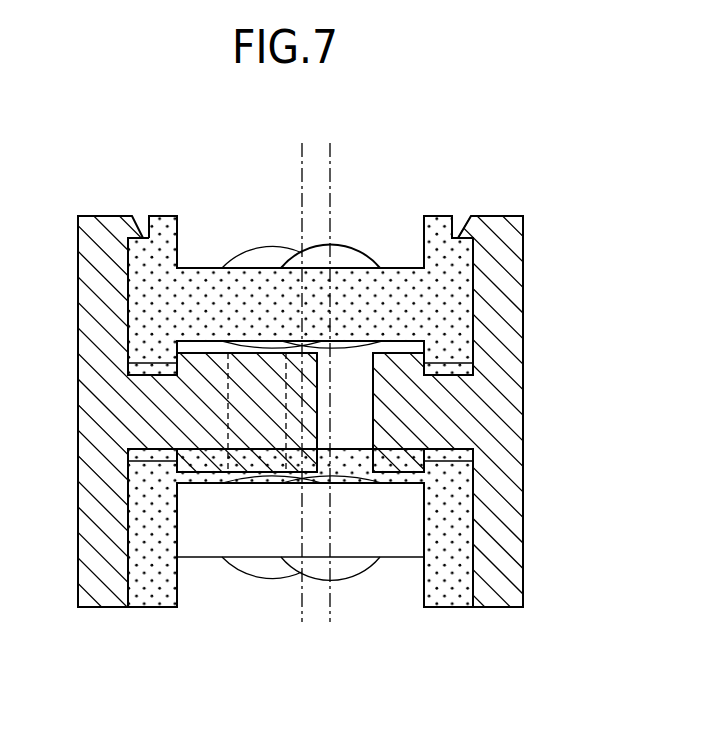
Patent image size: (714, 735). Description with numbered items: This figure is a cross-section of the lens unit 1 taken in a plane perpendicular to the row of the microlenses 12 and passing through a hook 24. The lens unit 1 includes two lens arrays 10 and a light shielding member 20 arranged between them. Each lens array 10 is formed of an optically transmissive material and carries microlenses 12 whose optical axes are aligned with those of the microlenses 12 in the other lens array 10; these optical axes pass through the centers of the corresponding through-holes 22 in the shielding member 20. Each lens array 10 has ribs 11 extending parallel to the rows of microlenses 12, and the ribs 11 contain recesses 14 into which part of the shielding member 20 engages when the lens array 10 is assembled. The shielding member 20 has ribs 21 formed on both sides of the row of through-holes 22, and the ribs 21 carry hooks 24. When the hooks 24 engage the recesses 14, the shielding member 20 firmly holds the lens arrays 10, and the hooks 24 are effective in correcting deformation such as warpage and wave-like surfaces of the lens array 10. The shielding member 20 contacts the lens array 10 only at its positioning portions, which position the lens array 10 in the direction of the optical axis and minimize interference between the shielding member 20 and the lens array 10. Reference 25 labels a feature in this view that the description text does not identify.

The lens unit 1 is at (593, 182).
The lens array 10 is at (128, 257).
The rib 11 is at (172, 237).
The microlens 12 is at (363, 246).
The recess 14 is at (452, 236).
The light shielding member 20 is at (78, 287).
The rib 21 is at (93, 327).
The through-hole 22 is at (375, 428).
The hook 24 is at (478, 227).
The corner gap 25 is at (469, 372).